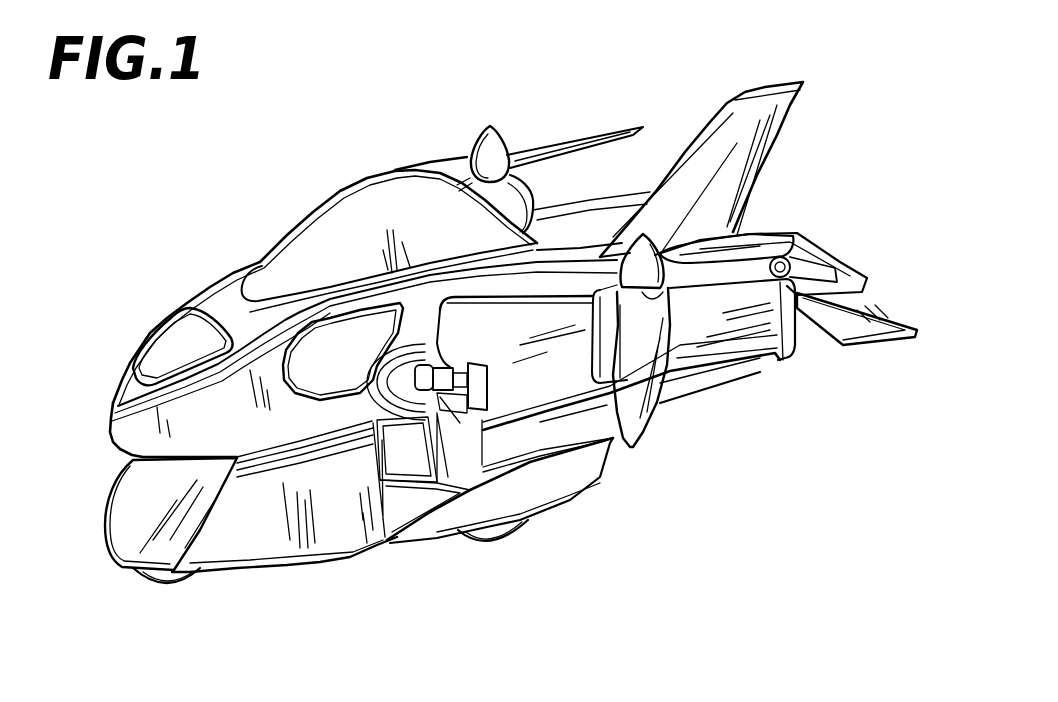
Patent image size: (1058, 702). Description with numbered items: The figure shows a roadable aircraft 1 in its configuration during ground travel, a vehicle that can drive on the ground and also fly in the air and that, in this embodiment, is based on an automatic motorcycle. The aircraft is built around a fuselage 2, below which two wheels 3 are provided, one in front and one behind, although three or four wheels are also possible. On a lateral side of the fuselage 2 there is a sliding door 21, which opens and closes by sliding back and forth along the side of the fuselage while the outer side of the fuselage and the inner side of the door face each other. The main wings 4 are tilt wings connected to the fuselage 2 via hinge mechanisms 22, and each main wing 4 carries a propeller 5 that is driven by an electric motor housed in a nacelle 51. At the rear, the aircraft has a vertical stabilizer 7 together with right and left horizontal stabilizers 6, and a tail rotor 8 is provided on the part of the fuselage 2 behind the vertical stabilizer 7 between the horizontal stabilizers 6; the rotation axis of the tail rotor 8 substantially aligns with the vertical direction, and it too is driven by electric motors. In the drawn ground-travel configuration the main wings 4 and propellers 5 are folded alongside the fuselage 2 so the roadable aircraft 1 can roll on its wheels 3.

The roadable aircraft 1 is at (293, 203).
The fuselage 2 is at (218, 307).
The wheels 3 is at (160, 577).
The main wings 4 is at (548, 387).
The propellers 5 is at (540, 148).
The nacelle 51 is at (650, 362).
The horizontal stabilizers 6 is at (738, 227).
The vertical stabilizer 7 is at (733, 127).
The tail rotor 8 is at (813, 272).
The sliding door 21 is at (463, 320).
The hinge mechanisms 22 is at (418, 358).